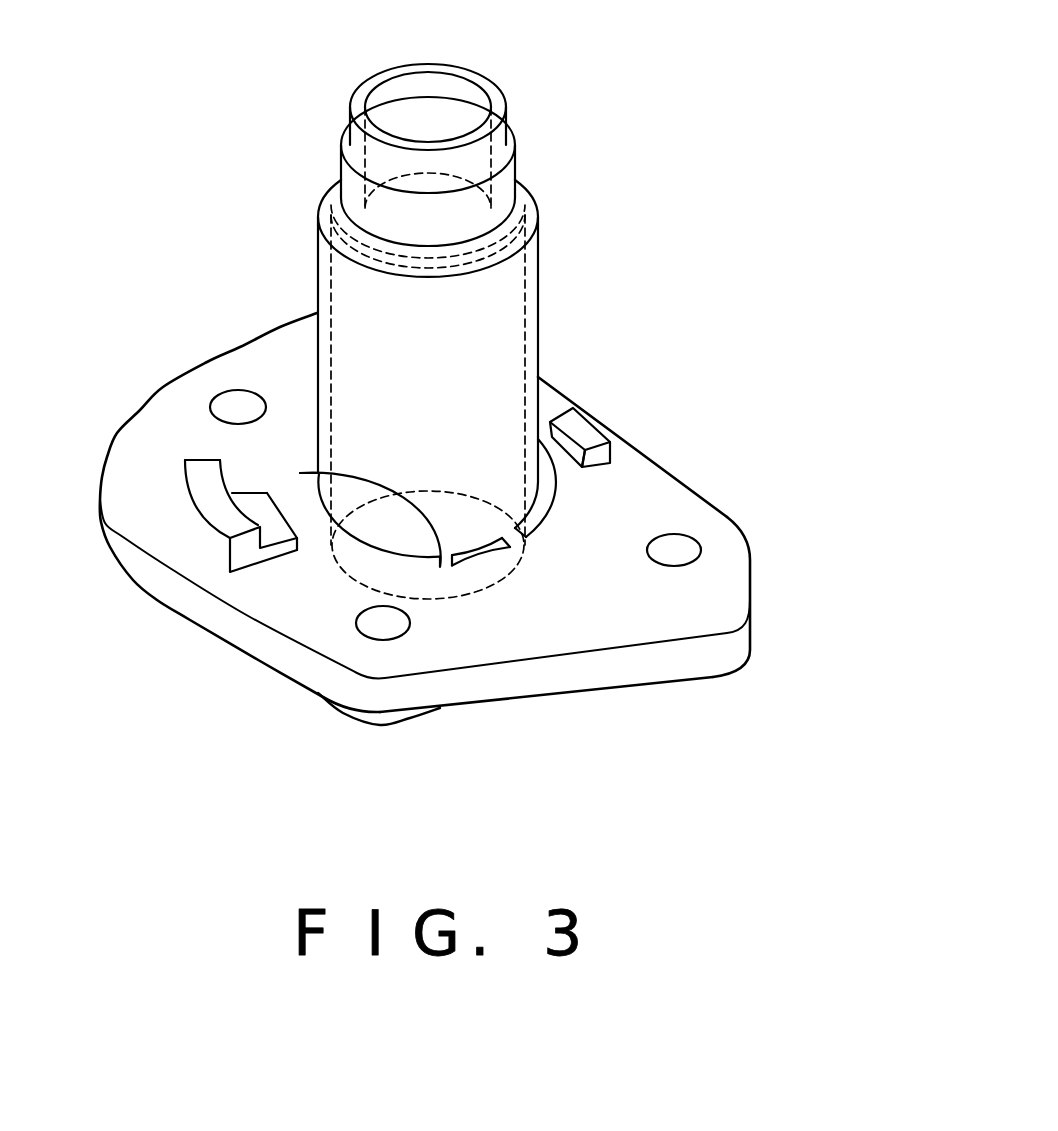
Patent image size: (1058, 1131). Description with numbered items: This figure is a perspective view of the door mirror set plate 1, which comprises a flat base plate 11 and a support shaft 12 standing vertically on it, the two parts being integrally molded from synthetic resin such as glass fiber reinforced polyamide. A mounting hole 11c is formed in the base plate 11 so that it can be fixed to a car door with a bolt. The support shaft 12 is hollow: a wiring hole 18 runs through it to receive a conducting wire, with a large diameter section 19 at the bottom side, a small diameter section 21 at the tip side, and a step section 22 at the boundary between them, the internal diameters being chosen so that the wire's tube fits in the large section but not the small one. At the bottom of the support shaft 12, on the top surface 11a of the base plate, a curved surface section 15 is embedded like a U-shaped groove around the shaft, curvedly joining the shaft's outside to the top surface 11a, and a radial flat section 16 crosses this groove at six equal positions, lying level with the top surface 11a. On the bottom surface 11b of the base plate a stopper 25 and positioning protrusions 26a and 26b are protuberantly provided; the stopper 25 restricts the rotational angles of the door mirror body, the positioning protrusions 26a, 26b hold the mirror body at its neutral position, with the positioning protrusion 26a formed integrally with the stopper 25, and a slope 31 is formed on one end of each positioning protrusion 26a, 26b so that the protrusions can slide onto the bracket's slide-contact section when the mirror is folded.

The set plate 1 is at (628, 91).
The base plate 11 is at (726, 590).
The top surface 11a is at (692, 506).
The bottom surface 11b is at (644, 689).
The mounting hole 11c is at (676, 548).
The support shaft 12 is at (383, 318).
The curved surface section 15 is at (363, 552).
The flat section 16 is at (450, 563).
The wiring hole 18 is at (480, 577).
The large diameter section 19 is at (527, 322).
The small diameter section 21 is at (518, 143).
The step section 22 is at (525, 223).
The stopper 25 is at (220, 503).
The positioning protrusion 26a is at (258, 490).
The positioning protrusion 26b is at (577, 430).
The slope 31 is at (248, 500).